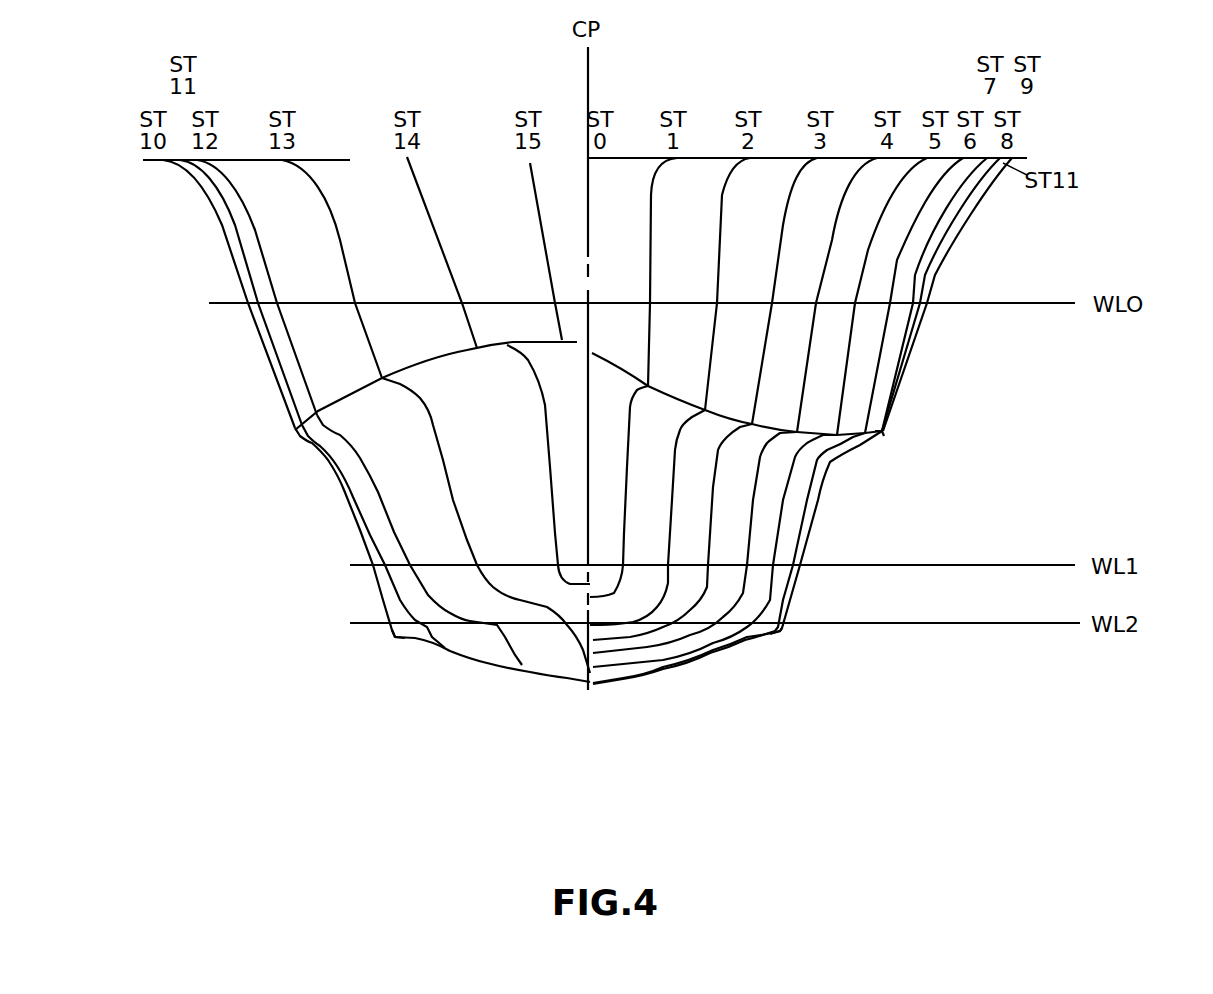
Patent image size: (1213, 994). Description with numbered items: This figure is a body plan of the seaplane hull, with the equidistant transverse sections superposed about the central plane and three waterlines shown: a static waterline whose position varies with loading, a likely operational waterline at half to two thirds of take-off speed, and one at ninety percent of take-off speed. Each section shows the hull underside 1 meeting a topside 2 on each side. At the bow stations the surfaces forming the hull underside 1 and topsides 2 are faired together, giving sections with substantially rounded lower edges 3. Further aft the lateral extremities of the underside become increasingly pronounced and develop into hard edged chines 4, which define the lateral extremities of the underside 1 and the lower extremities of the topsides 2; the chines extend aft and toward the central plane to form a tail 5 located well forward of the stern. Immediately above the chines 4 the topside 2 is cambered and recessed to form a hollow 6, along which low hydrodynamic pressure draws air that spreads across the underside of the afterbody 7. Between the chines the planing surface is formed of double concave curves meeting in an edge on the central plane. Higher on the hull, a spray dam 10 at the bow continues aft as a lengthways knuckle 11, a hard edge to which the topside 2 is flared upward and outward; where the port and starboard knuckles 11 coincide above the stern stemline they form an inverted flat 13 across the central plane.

The hull underside 1 is at (640, 673).
The topside 2 is at (937, 242).
The rounded lower edges 3 is at (696, 601).
The chines 4 is at (395, 637).
The tail 5 is at (589, 650).
The hollow 6 is at (497, 627).
The afterbody 7 is at (548, 608).
The spray dam 10 is at (600, 355).
The knuckle 11 is at (888, 436).
The inverted flat 13 is at (577, 342).